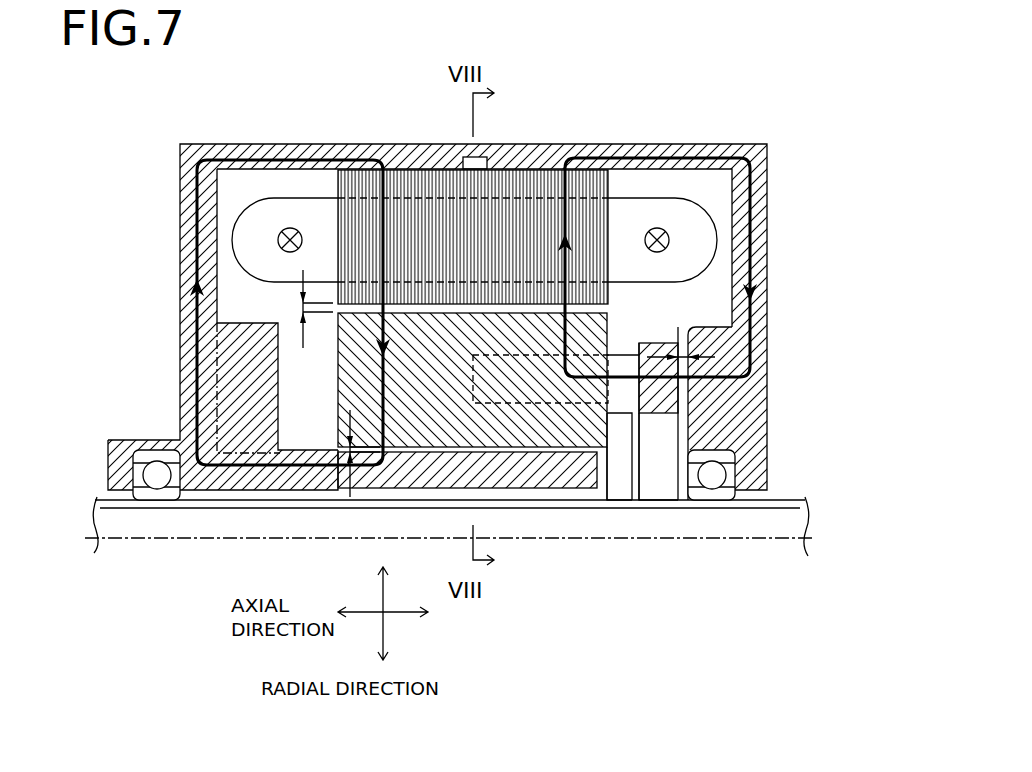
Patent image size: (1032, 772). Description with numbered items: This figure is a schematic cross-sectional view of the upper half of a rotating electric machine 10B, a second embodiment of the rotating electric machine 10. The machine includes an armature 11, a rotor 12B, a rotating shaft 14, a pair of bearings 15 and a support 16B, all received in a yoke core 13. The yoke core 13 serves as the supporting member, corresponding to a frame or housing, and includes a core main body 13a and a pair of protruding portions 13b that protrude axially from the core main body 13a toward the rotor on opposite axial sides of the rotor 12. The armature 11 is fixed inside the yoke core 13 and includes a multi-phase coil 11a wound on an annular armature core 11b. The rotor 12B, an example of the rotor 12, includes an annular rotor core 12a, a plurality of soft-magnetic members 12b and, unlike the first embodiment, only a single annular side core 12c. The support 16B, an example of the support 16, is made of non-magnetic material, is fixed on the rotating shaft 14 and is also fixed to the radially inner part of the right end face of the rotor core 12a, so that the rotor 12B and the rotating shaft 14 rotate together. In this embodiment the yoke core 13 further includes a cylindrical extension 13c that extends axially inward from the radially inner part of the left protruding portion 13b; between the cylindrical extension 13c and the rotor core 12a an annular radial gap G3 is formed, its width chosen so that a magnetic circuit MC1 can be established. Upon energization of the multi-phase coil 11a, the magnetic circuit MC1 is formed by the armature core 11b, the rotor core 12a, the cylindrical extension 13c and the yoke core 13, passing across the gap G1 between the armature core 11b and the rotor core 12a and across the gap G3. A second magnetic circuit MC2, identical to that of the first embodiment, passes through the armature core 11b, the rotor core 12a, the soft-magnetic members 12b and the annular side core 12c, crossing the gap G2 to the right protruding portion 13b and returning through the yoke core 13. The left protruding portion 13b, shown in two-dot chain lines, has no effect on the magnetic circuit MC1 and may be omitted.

The rotating electric machine 10 is at (482, 341).
The rotating electric machine 10B is at (256, 128).
The armature 11 is at (400, 94).
The multi-phase coil 11a is at (315, 228).
The armature core 11b is at (450, 240).
The rotor 12 is at (515, 277).
The rotor 12B is at (688, 94).
The rotor core 12a is at (512, 330).
The soft-magnetic members 12b is at (628, 370).
The annular side core 12c is at (655, 355).
The yoke core 13 is at (492, 362).
The core main body 13a is at (756, 168).
The protruding portions 13b is at (797, 327).
The cylindrical extension 13c is at (525, 468).
The rotating shaft 14 is at (200, 520).
The bearings 15 is at (157, 478).
The support 16 is at (644, 521).
The support 16B is at (622, 470).
The magnetic circuit MC1 is at (183, 213).
The magnetic circuit MC2 is at (760, 243).
The gap G1 is at (295, 309).
The gap G2 is at (683, 347).
The radial gap G3 is at (350, 452).